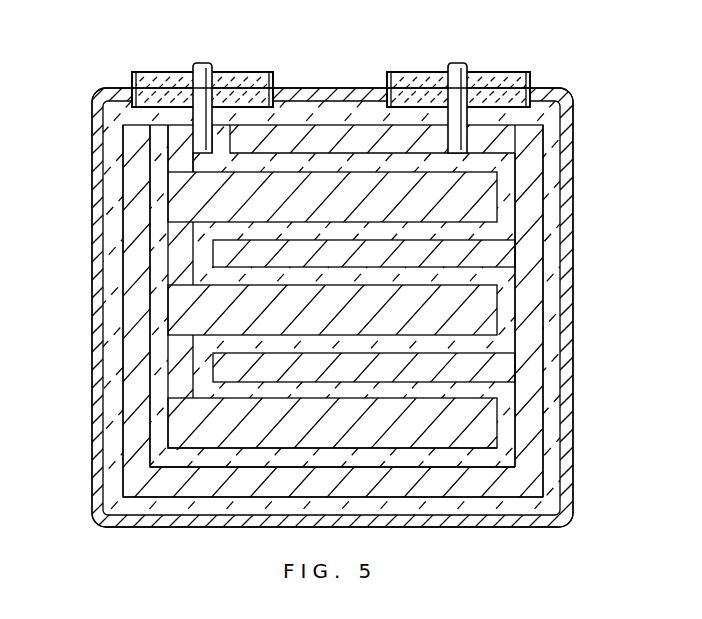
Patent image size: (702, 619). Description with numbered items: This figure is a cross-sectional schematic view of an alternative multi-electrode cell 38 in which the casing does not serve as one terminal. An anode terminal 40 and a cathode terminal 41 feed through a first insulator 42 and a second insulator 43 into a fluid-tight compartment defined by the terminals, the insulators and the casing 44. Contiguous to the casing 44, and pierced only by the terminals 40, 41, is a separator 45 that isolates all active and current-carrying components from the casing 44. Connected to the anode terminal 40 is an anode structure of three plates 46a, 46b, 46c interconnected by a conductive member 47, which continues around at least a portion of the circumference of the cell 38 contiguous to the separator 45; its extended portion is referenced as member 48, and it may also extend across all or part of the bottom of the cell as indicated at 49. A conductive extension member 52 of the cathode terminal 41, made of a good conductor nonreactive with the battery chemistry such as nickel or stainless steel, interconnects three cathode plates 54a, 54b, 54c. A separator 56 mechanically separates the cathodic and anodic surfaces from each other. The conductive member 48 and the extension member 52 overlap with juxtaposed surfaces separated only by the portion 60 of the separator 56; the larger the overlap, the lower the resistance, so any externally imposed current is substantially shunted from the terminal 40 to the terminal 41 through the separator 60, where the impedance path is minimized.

The cell 38 is at (128, 539).
The anode terminal 40 is at (473, 73).
The cathode terminal 41 is at (221, 77).
The first insulator 42 is at (427, 73).
The second insulator 43 is at (178, 70).
The casing 44 is at (94, 93).
The separator 45 is at (308, 110).
The anode plate 46a is at (497, 134).
The anode plate 46b is at (493, 250).
The anode plate 46c is at (483, 362).
The conductive member 47 is at (530, 440).
The extended portion of conductive member 48 is at (135, 372).
The bottom extension of conductive member 49 is at (437, 486).
The conductive extension member 52 is at (168, 143).
The cathode plate 54a is at (213, 193).
The cathode plate 54b is at (215, 308).
The cathode plate 54c is at (215, 424).
The separator 56 is at (507, 190).
The separator portion 60 is at (157, 257).